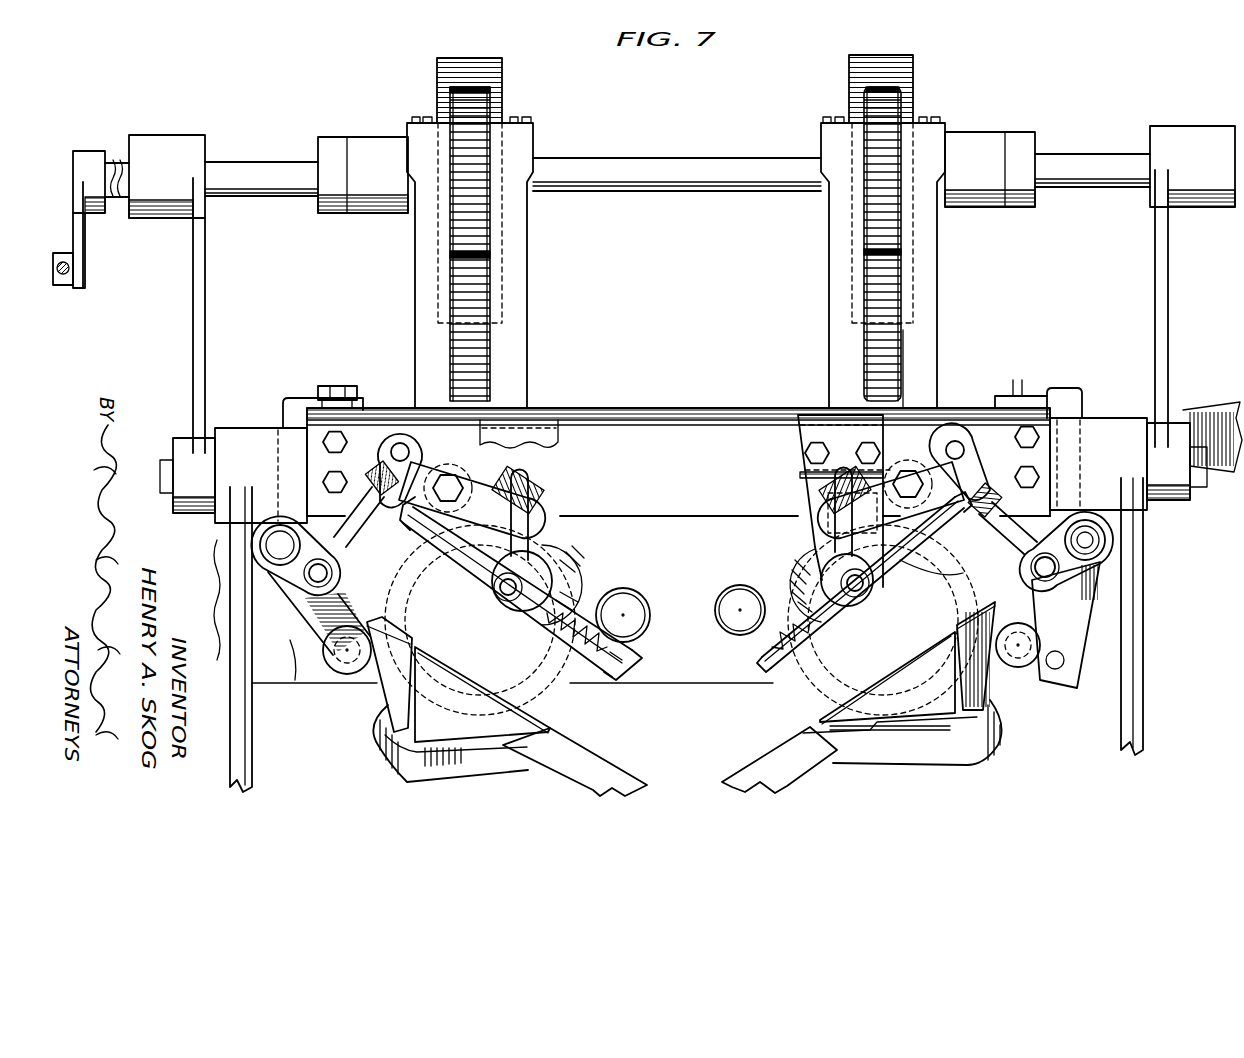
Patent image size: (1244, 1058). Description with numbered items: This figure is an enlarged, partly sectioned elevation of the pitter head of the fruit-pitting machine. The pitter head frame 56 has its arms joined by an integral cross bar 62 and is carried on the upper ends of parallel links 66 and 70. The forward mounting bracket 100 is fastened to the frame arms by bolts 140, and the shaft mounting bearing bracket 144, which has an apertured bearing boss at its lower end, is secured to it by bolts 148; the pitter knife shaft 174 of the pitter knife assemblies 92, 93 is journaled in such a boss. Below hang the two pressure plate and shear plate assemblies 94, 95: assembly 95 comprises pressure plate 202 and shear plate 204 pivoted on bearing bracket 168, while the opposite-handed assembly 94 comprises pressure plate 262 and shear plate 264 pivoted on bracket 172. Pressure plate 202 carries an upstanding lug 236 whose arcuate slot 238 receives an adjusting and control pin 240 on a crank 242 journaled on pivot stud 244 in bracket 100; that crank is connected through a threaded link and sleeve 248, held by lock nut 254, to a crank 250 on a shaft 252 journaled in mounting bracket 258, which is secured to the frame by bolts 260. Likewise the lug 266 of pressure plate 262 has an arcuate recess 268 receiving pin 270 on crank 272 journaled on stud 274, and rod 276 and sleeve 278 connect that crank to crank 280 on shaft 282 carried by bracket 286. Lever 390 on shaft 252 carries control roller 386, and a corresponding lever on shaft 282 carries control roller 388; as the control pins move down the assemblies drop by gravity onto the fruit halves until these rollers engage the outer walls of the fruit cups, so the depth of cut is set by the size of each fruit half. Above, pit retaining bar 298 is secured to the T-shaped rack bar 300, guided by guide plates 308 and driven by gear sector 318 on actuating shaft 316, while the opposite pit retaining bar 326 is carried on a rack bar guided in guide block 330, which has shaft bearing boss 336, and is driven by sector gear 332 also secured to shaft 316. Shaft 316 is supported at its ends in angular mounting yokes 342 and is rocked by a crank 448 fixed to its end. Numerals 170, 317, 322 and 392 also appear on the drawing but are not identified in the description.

The pitter head frame 56 is at (637, 391).
The cross bar 62 is at (708, 405).
The parallel link 66 is at (1146, 725).
The parallel link 70 is at (252, 758).
The pitter knife assembly 92 is at (788, 556).
The pitter knife assembly 93 is at (570, 575).
The pressure plate and shear plate assembly 94 is at (724, 658).
The pressure plate and shear plate assembly 95 is at (645, 625).
The forward mounting bracket 100 is at (700, 516).
The bolts 140 is at (1015, 477).
The shaft mounting bearing bracket 144 is at (798, 437).
The bolts 148 is at (805, 453).
The bearing bracket 168 is at (622, 602).
The bolts 170 is at (323, 482).
The bracket 172 is at (718, 612).
The pitter knife shaft 174 is at (518, 582).
The pressure plate 202 is at (613, 685).
The shear plate 204 is at (590, 710).
The upstanding lug 236 is at (538, 472).
The arcuate slot 238 is at (543, 489).
The adjusting and control pin 240 is at (541, 501).
The crank 242 is at (470, 480).
The pivot stud 244 is at (423, 459).
The sleeve 248 is at (333, 582).
The crank 250 is at (292, 600).
The shaft 252 is at (258, 543).
The lock nut 254 is at (350, 538).
The mounting bracket 258 is at (283, 410).
The bolts 260 is at (340, 386).
The pressure plate 262 is at (785, 690).
The shear plate 264 is at (747, 680).
The upstanding lug 266 is at (960, 573).
The arcuate recess 268 is at (827, 503).
The adjusting and control pin 270 is at (833, 528).
The crank 272 is at (950, 440).
The stud 274 is at (908, 470).
The rod 276 is at (352, 397).
The sleeve 278 is at (1060, 480).
The crank 280 is at (1070, 388).
The shaft 282 is at (1100, 540).
The bracket 286 is at (1033, 385).
The pit retaining bar 298 is at (908, 330).
The rack bar 300 is at (914, 80).
The guide plates 308 is at (829, 307).
The actuating shaft 316 is at (695, 192).
The collar 317 is at (965, 207).
The gear sector 318 is at (865, 96).
The flange 322 is at (945, 123).
The pit retaining bar 326 is at (529, 372).
The guide block 330 is at (529, 252).
The sector gear 332 is at (478, 112).
The shaft bearing boss 336 is at (375, 213).
The angular mounting yoke 342 is at (206, 291).
The control roller 386 is at (347, 675).
The control roller 388 is at (1020, 668).
The lever 390 is at (296, 680).
The link plate 392 is at (1098, 655).
The crank 448 is at (78, 255).